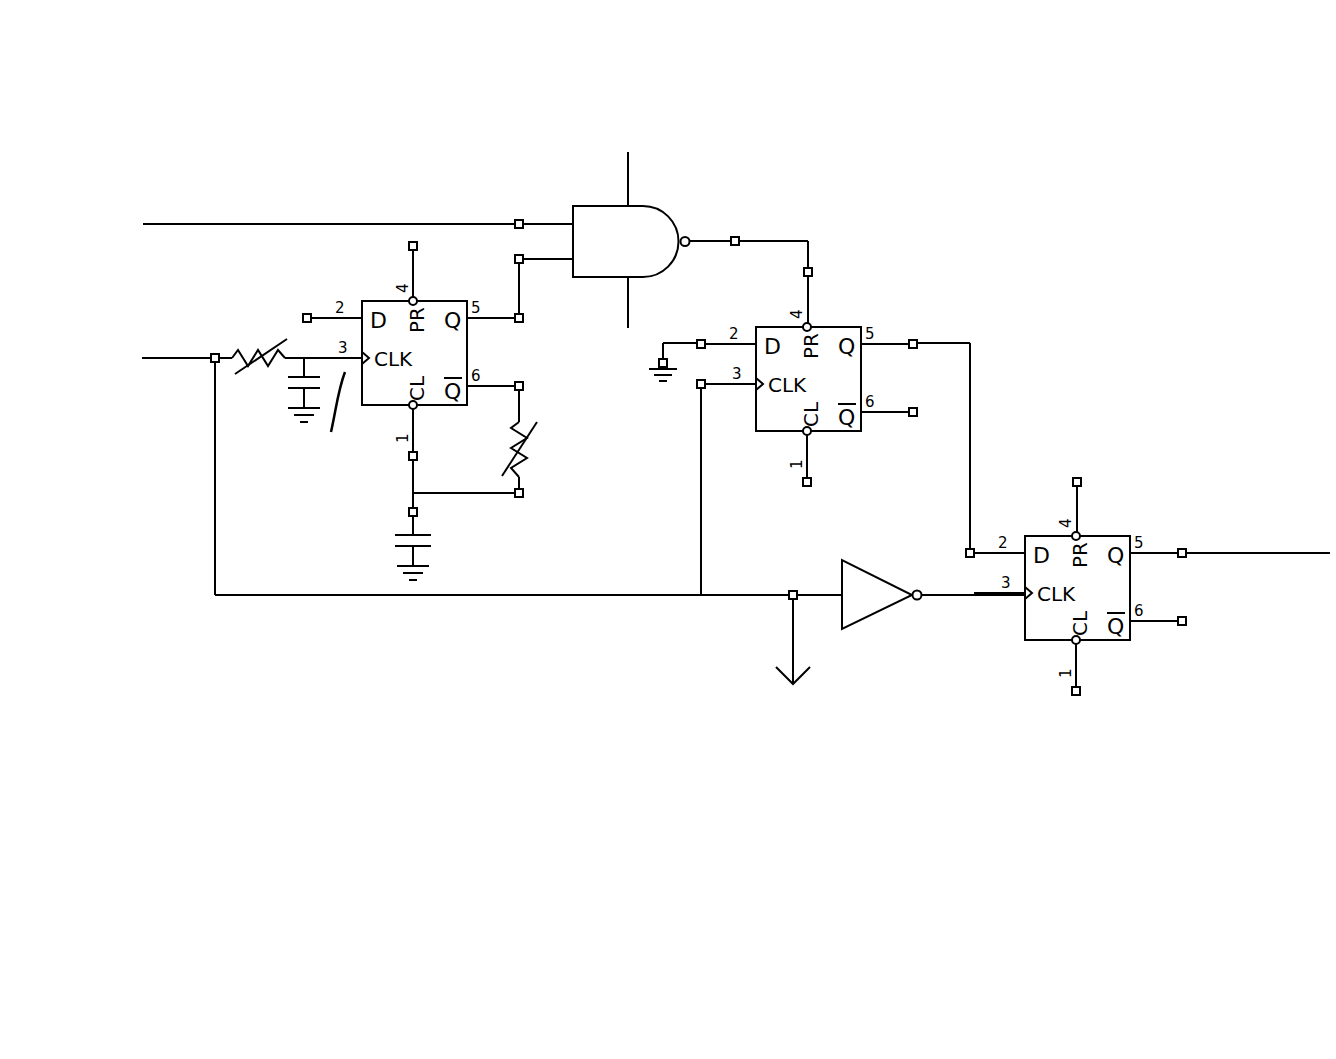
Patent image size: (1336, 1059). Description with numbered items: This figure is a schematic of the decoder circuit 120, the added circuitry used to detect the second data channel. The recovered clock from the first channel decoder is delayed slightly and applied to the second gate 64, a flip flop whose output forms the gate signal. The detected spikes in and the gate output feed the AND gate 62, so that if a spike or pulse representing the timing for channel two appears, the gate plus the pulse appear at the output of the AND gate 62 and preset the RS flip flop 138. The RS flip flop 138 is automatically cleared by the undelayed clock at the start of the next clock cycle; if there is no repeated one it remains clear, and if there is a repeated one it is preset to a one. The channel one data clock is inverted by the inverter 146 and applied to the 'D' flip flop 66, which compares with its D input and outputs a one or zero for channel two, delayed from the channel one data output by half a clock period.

The decoder circuit 120 is at (930, 188).
The AND gate 62 is at (657, 232).
The second gate 64 is at (434, 312).
The RS flip flop 138 is at (835, 333).
The 'D' flip flop 66 is at (1100, 641).
The inverter 146 is at (857, 612).